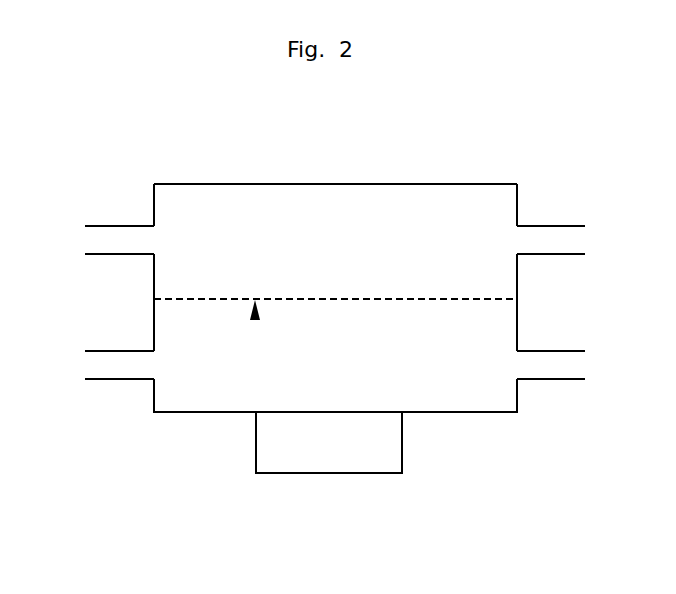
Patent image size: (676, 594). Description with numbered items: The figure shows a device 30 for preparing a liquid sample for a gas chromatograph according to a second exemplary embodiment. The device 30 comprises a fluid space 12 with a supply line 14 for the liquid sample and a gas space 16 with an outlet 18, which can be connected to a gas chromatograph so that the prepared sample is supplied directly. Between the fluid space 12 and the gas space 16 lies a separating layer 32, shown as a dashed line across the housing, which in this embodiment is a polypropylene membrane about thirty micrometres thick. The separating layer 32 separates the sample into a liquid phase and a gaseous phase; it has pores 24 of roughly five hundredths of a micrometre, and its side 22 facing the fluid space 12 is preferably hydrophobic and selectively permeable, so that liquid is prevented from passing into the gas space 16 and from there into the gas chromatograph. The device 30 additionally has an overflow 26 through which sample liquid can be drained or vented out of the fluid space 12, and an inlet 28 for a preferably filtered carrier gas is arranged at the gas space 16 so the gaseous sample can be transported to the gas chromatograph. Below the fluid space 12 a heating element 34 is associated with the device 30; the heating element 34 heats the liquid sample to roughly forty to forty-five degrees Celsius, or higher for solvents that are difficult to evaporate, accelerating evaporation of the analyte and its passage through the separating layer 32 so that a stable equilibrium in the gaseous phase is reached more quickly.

The fluid space 12 is at (455, 414).
The supply line 14 is at (111, 380).
The gas space 16 is at (410, 184).
The outlet 18 is at (533, 226).
The side 22 is at (255, 322).
The pores 24 is at (190, 302).
The overflow 26 is at (535, 381).
The inlet 28 is at (105, 224).
The device 30 is at (94, 134).
The separating layer 32 is at (231, 298).
The heating element 34 is at (319, 475).